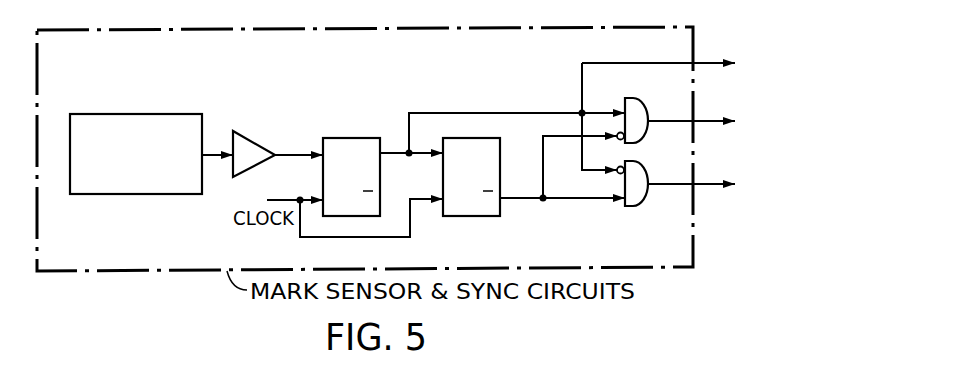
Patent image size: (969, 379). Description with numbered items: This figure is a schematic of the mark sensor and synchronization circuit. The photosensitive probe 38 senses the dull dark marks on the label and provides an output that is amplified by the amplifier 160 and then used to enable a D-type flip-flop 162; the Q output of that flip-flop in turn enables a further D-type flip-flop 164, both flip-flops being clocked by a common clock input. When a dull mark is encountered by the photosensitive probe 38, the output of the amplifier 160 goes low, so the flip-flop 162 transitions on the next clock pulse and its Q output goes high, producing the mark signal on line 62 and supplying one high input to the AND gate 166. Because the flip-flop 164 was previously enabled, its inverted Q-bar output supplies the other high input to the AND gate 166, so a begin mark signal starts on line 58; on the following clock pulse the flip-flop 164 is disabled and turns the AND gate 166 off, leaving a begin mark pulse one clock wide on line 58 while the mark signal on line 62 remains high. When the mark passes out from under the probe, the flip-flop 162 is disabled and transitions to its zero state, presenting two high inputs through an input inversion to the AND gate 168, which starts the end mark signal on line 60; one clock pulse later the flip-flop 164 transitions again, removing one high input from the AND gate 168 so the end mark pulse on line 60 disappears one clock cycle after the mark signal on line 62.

The photosensitive probe 38 is at (182, 113).
The amplifier 160 is at (263, 143).
The D-type flip-flop 162 is at (355, 137).
The further D-type flip-flop 164 is at (472, 217).
The AND gate 166 is at (649, 106).
The AND gate 168 is at (658, 164).
The mark signal line 62 is at (706, 62).
The begin mark line 58 is at (705, 120).
The end mark line 60 is at (706, 183).